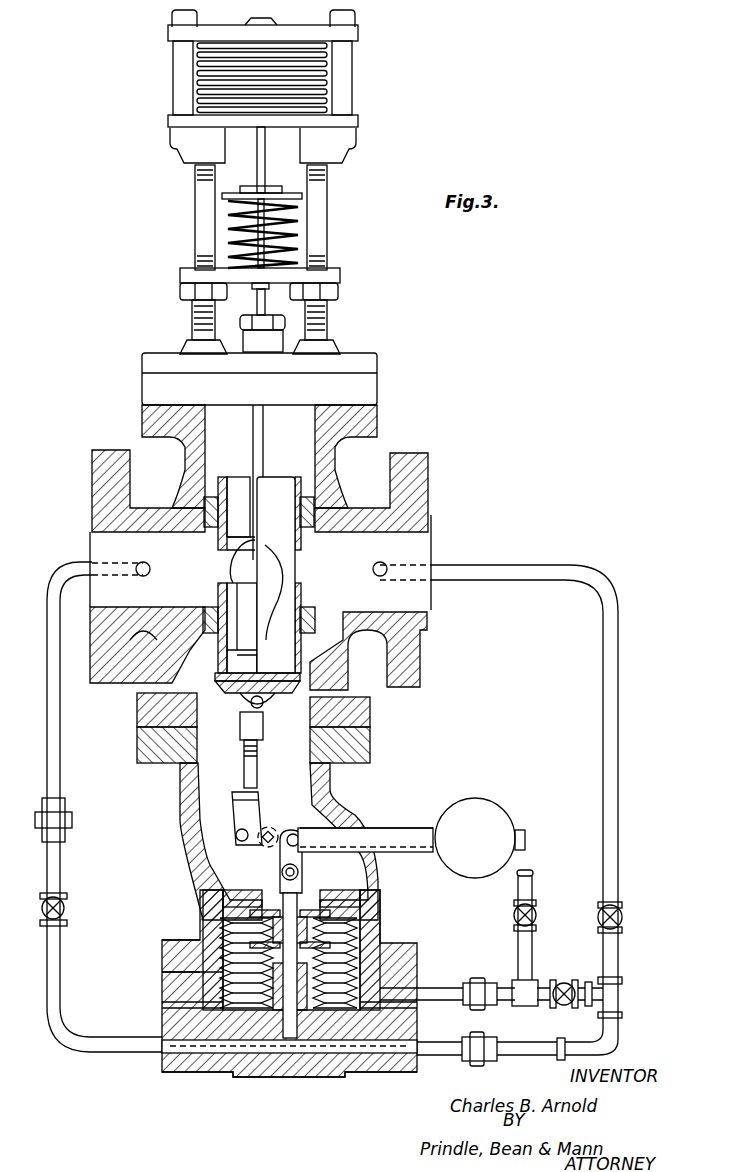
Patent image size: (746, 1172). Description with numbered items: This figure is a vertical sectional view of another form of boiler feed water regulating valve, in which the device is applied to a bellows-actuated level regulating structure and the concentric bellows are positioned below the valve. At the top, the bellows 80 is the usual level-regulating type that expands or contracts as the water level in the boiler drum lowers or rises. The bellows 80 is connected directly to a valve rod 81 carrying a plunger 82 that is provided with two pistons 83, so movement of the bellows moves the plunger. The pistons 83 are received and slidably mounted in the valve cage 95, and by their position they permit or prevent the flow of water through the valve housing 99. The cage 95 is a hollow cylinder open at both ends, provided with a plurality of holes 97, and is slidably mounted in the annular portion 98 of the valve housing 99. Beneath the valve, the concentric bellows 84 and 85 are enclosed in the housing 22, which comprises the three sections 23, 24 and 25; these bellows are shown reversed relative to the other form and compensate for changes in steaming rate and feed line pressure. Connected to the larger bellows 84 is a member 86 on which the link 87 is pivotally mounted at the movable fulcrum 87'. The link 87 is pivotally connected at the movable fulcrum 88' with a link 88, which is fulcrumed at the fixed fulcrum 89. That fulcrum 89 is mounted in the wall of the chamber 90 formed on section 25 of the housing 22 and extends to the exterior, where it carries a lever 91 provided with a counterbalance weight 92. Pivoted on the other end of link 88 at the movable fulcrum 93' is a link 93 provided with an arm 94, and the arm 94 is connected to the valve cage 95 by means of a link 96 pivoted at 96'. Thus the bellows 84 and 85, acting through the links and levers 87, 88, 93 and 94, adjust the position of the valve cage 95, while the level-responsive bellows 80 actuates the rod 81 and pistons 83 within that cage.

The housing 22 is at (205, 1082).
The section 23 is at (165, 1060).
The section 24 is at (168, 982).
The section 25 is at (172, 950).
The bellows 80 is at (325, 86).
The valve rod 81 is at (264, 172).
The plunger 82 is at (258, 575).
The pistons 83 is at (228, 548).
The bellows 84 is at (353, 933).
The bellows 85 is at (218, 988).
The member 86 is at (212, 900).
The link 87 is at (366, 862).
The movable fulcrum 87' is at (359, 882).
The link 88 is at (361, 811).
The movable fulcrum 88' is at (337, 841).
The fixed fulcrum 89 is at (270, 828).
The chamber 90 is at (212, 800).
The lever 91 is at (407, 835).
The counterbalance weight 92 is at (483, 820).
The link 93 is at (202, 818).
The movable fulcrum 93' is at (195, 847).
The arm 94 is at (245, 766).
The valve cage 95 is at (225, 672).
The link 96 is at (368, 730).
The pivot 96' is at (314, 688).
The holes 97 is at (272, 655).
The annular portion 98 is at (308, 497).
The valve housing 99 is at (417, 473).